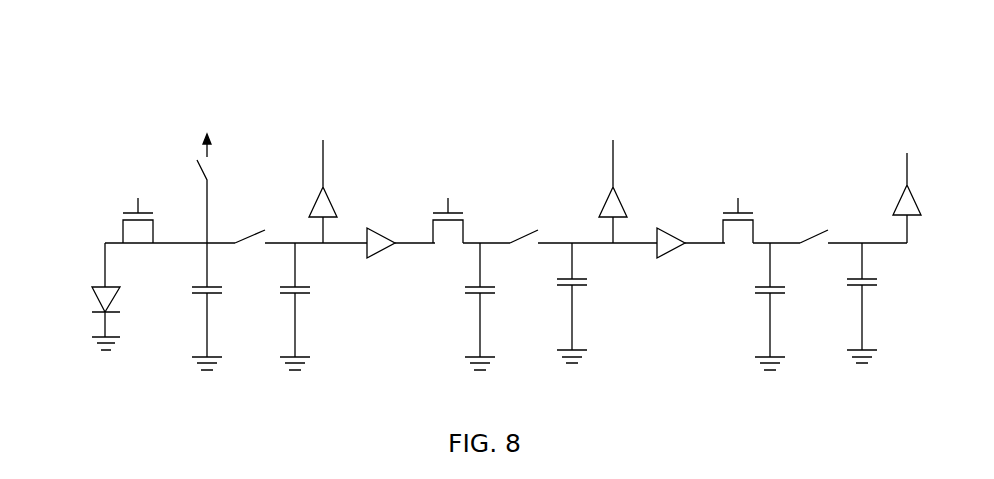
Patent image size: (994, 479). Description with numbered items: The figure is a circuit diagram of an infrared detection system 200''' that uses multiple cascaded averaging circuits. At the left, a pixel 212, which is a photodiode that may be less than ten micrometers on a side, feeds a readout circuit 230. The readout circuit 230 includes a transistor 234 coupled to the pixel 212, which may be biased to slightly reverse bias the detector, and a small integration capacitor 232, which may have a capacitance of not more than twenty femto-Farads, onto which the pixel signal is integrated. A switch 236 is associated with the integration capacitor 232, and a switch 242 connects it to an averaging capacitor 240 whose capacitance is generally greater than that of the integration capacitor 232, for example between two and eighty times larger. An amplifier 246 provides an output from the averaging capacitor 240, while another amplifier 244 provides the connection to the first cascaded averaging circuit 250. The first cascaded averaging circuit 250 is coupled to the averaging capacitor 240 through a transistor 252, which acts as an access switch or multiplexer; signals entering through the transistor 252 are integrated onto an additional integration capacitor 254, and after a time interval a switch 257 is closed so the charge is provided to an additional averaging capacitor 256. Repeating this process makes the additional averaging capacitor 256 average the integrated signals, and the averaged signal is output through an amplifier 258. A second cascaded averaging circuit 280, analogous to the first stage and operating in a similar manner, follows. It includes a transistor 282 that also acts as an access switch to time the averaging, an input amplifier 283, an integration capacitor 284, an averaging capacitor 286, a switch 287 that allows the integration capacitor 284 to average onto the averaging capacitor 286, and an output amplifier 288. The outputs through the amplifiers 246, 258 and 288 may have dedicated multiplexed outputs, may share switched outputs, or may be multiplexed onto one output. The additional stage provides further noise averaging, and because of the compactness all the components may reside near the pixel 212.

The IR detection system 200''' is at (506, 138).
The pixel 212 is at (82, 300).
The readout circuit 230 is at (198, 133).
The integration capacitor 232 is at (180, 290).
The transistor 234 is at (100, 228).
The switch 236 is at (192, 172).
The averaging capacitor 240 is at (317, 305).
The switch 242 is at (272, 258).
The amplifier 244 is at (363, 272).
The amplifier 246 is at (303, 207).
The cascaded averaging circuit 250 is at (443, 125).
The transistor 252 is at (443, 197).
The additional integration capacitor 254 is at (505, 287).
The additional averaging capacitor 256 is at (593, 297).
The switch 257 is at (530, 217).
The amplifier 258 is at (585, 200).
The second cascaded averaging circuit 280 is at (733, 125).
The transistor 282 is at (735, 197).
The input amplifier 283 is at (655, 272).
The integration capacitor 284 is at (795, 287).
The averaging capacitor 286 is at (883, 300).
The switch 287 is at (820, 217).
The output amplifier 288 is at (875, 200).